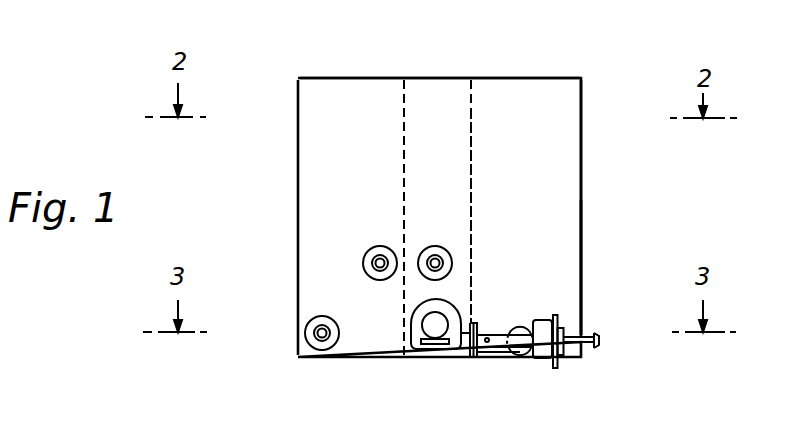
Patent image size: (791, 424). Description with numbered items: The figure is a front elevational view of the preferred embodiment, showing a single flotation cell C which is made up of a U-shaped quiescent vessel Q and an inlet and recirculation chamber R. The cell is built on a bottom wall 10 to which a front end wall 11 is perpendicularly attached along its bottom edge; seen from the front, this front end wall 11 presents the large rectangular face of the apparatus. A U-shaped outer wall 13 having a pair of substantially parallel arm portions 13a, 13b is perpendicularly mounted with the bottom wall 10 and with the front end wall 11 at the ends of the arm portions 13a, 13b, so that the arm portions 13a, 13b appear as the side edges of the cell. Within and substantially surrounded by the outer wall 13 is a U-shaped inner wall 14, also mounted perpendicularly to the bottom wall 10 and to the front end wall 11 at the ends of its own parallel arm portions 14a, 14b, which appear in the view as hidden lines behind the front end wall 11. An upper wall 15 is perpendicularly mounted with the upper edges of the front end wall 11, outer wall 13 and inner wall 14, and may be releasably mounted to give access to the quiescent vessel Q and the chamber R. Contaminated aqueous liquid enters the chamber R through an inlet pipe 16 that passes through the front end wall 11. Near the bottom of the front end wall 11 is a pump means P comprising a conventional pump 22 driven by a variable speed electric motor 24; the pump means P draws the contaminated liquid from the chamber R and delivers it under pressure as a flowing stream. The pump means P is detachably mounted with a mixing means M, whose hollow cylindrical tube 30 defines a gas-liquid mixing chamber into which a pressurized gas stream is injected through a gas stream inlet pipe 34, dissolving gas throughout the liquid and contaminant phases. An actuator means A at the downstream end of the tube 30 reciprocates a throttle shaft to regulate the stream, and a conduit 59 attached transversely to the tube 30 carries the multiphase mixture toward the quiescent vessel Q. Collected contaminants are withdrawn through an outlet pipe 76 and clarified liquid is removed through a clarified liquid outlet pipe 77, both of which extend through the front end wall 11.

The bottom wall 10 is at (330, 357).
The front end wall 11 is at (447, 175).
The U-shaped outer wall 13 is at (582, 195).
The arm portion 13a is at (582, 222).
The arm portion 13b is at (298, 200).
The U-shaped inner wall 14 is at (472, 113).
The arm portion 14a is at (474, 133).
The arm portion 14b is at (404, 145).
The upper wall 15 is at (540, 78).
The inlet pipe 16 is at (435, 246).
The pump 22 is at (415, 327).
The variable speed electric motor 24 is at (427, 318).
The hollow cylindrical tube 30 is at (487, 330).
The gas stream inlet pipe 34 is at (487, 352).
The conduit 59 is at (518, 327).
The outlet pipe 76 is at (371, 252).
The clarified liquid outlet pipe 77 is at (316, 333).
The flotation cell C is at (441, 70).
The inlet and recirculation chamber R is at (452, 96).
The U-shaped quiescent vessel Q is at (562, 172).
The actuator means A is at (566, 315).
The pump means P is at (417, 348).
The mixing means M is at (495, 366).